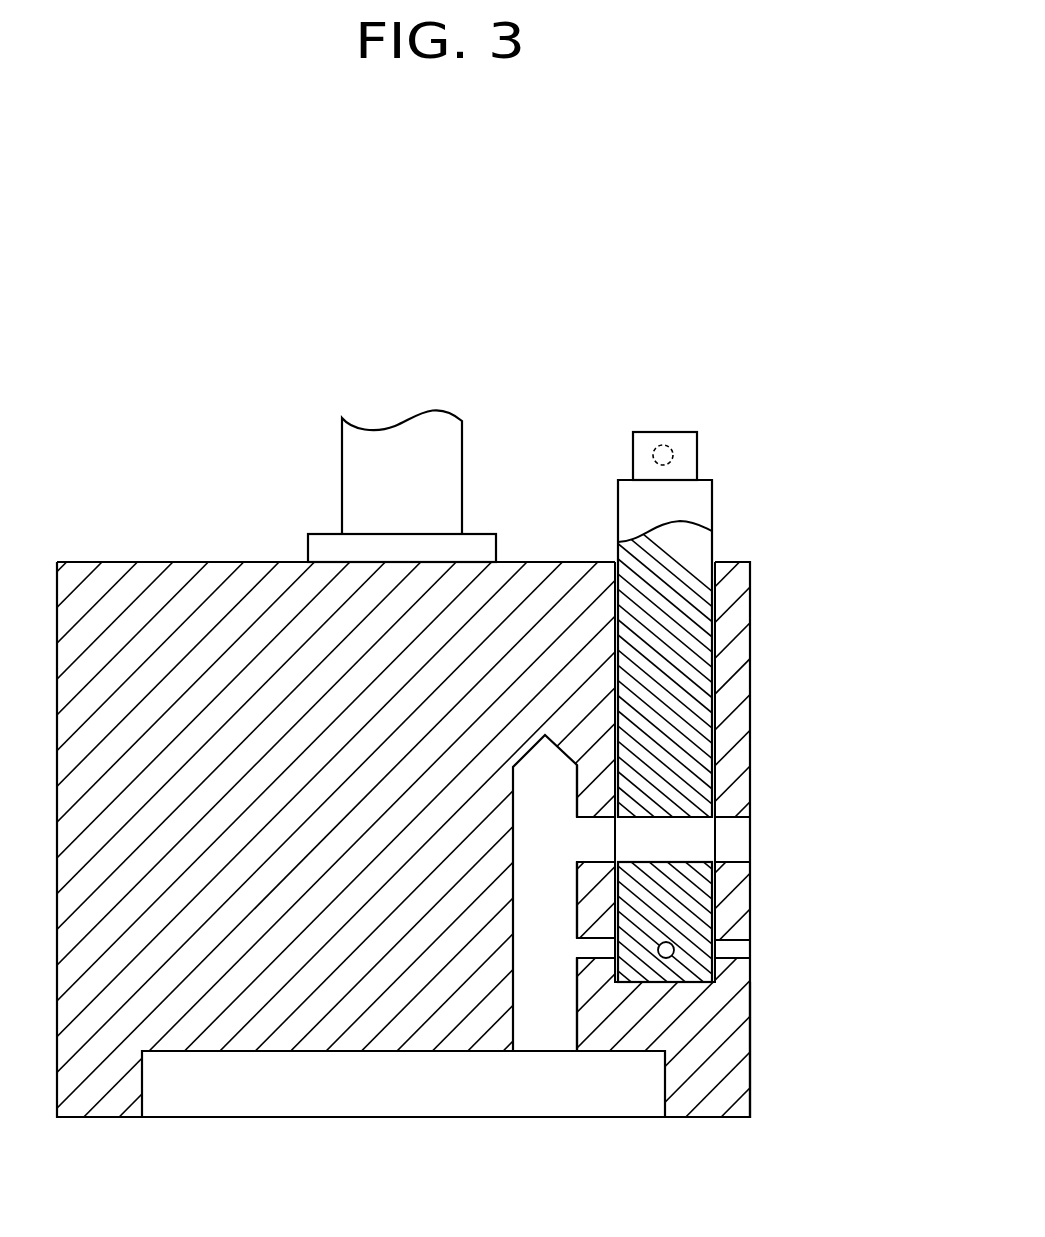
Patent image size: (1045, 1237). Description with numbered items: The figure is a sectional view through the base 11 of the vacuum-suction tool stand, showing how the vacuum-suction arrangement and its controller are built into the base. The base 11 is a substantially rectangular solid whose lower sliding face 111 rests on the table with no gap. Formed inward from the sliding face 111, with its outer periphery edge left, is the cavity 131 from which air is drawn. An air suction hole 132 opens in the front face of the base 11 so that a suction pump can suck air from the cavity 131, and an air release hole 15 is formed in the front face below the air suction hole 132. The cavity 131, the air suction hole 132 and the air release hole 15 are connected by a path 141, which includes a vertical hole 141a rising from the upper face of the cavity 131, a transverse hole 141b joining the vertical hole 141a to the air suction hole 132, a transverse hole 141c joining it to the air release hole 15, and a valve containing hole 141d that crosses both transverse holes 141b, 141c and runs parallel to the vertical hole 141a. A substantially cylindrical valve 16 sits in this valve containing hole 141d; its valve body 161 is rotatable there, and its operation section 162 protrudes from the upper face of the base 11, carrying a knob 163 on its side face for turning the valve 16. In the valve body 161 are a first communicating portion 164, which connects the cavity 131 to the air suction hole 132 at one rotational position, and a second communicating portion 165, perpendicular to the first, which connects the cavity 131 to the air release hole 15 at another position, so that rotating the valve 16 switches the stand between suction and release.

The base 11 is at (203, 1023).
The sliding face 111 is at (728, 1095).
The cavity 131 is at (592, 1102).
The air suction hole 132 is at (738, 845).
The path 141 is at (740, 858).
The vertical hole 141a is at (555, 768).
The transverse hole 141b is at (597, 842).
The transverse hole 141c is at (627, 925).
The valve containing hole 141d is at (712, 702).
The air release hole 15 is at (721, 927).
The valve 16 is at (732, 633).
The valve body 161 is at (693, 617).
The operation section 162 is at (687, 445).
The knob 163 is at (660, 444).
The first communicating portion 164 is at (635, 845).
The second communicating portion 165 is at (672, 958).